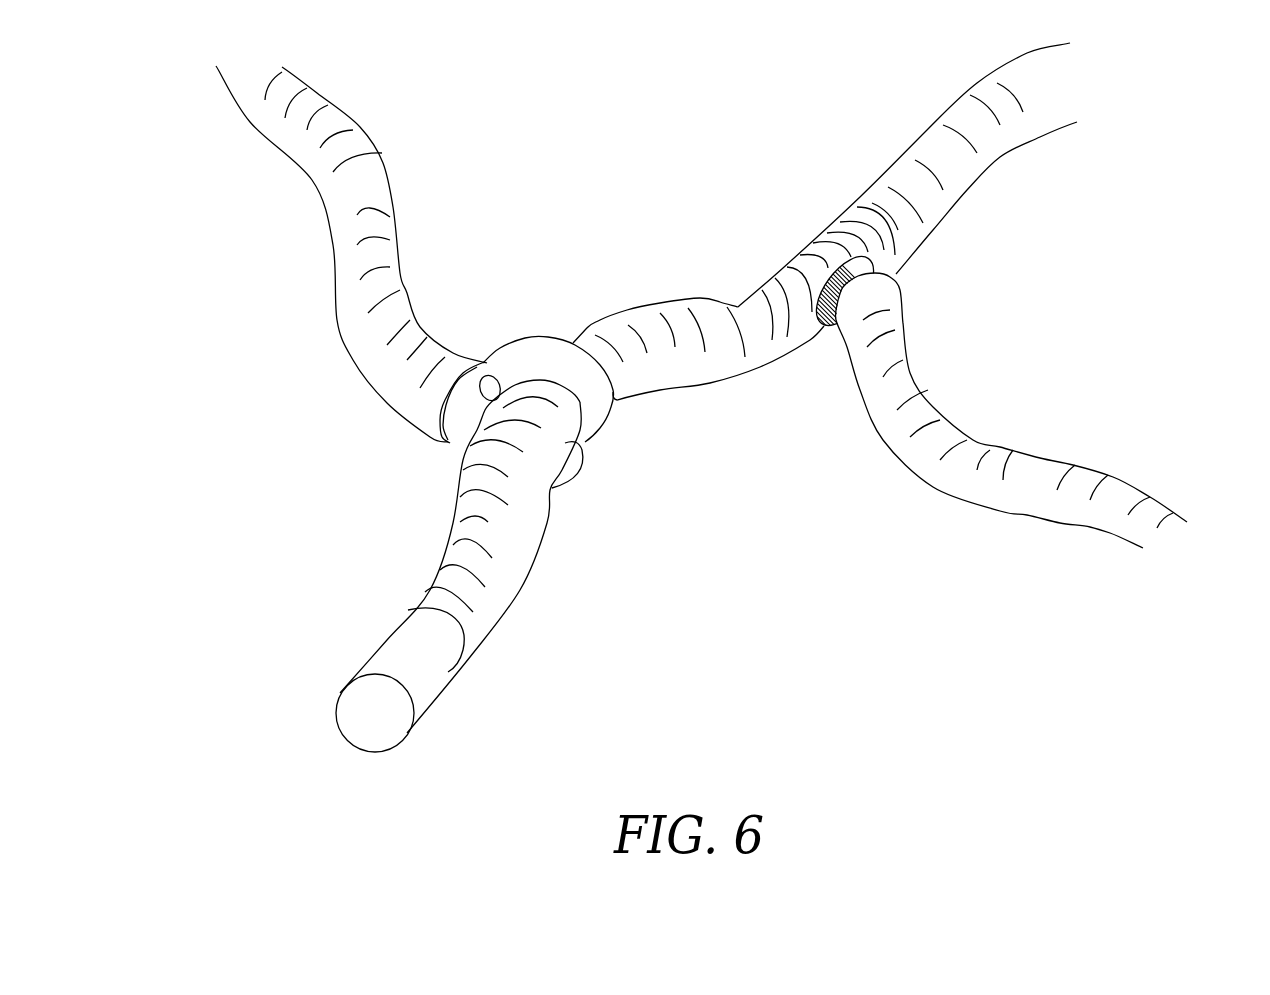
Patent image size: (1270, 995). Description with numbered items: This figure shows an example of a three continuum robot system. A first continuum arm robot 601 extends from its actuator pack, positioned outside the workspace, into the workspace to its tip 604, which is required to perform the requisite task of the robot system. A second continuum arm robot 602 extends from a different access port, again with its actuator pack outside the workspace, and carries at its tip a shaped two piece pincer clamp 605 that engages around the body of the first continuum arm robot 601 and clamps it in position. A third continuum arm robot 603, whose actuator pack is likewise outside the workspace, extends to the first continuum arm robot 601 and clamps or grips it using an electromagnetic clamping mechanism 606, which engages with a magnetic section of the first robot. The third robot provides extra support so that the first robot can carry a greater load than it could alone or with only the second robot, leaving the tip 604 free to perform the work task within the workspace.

The first continuum arm robot 601 is at (949, 149).
The second continuum arm robot 602 is at (358, 186).
The third continuum arm robot 603 is at (961, 461).
The tip 604 is at (420, 678).
The shaped two piece pincer clamp 605 is at (604, 446).
The electromagnetic clamping mechanism 606 is at (901, 285).